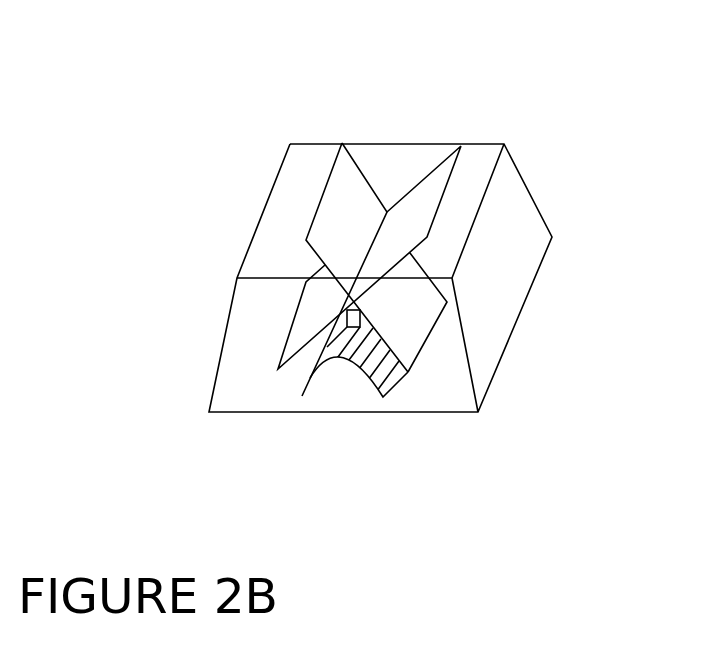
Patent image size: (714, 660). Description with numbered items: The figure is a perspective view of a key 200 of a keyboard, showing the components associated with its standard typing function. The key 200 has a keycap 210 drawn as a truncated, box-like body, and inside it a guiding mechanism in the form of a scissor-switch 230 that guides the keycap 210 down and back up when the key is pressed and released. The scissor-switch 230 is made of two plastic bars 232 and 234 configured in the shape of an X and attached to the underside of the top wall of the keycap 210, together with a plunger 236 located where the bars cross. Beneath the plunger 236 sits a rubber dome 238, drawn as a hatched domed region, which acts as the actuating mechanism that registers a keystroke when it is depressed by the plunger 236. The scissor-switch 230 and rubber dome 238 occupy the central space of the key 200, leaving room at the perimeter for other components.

The key 200 is at (400, 271).
The keycap 210 is at (500, 363).
The scissor-switch 230 is at (430, 211).
The plastic bar 232 is at (355, 269).
The plastic bar 234 is at (369, 259).
The plunger 236 is at (350, 308).
The rubber dome 238 is at (351, 358).